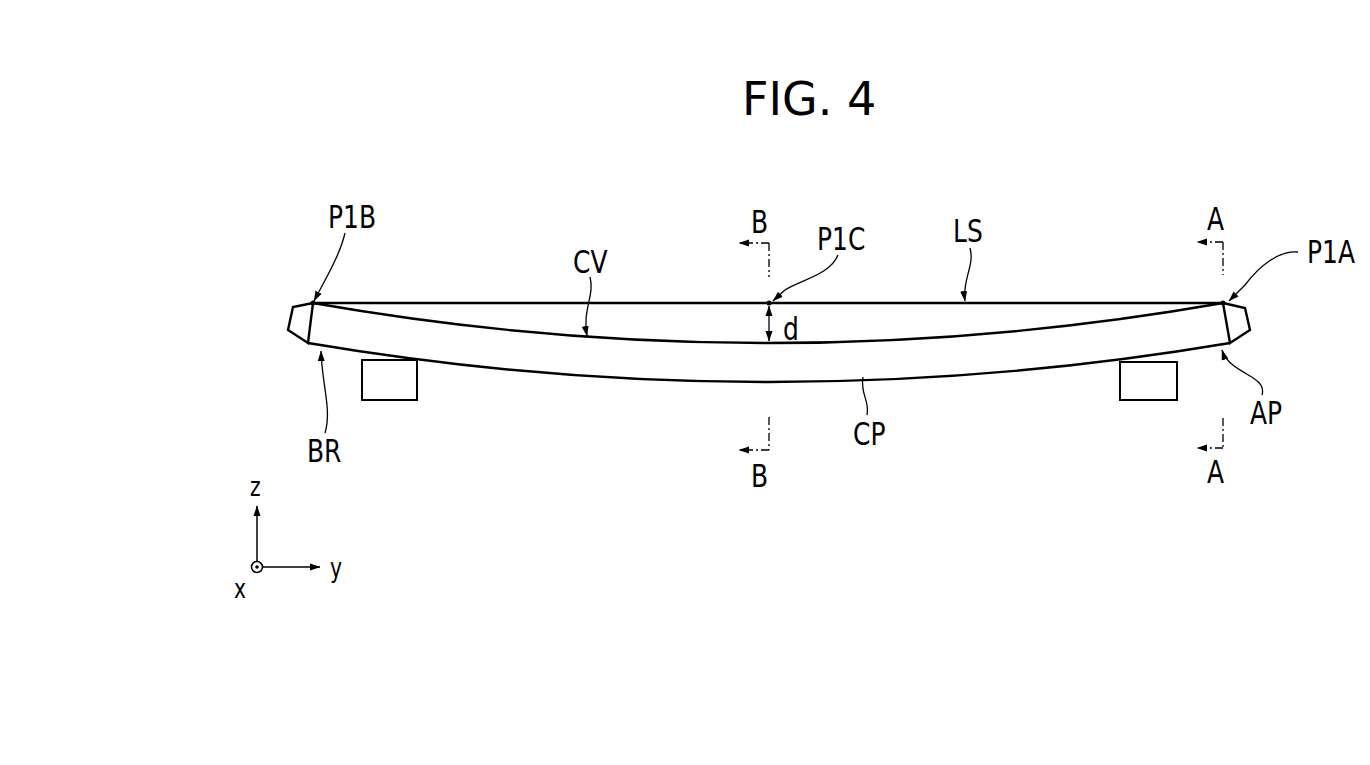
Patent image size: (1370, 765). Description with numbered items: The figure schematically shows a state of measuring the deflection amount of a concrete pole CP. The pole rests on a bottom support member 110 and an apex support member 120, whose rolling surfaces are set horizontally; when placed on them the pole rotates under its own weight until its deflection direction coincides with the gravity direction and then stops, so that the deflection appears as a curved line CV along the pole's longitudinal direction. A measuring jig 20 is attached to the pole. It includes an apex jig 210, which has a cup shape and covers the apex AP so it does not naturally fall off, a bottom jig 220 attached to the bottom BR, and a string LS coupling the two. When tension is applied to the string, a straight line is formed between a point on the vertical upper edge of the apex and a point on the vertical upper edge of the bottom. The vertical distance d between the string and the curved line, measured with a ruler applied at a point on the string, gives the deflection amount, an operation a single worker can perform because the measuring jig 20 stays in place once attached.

The measuring jig 20 is at (778, 367).
The apex jig 210 is at (1259, 319).
The bottom jig 220 is at (290, 330).
The bottom support member 110 is at (400, 393).
The apex support member 120 is at (1140, 392).